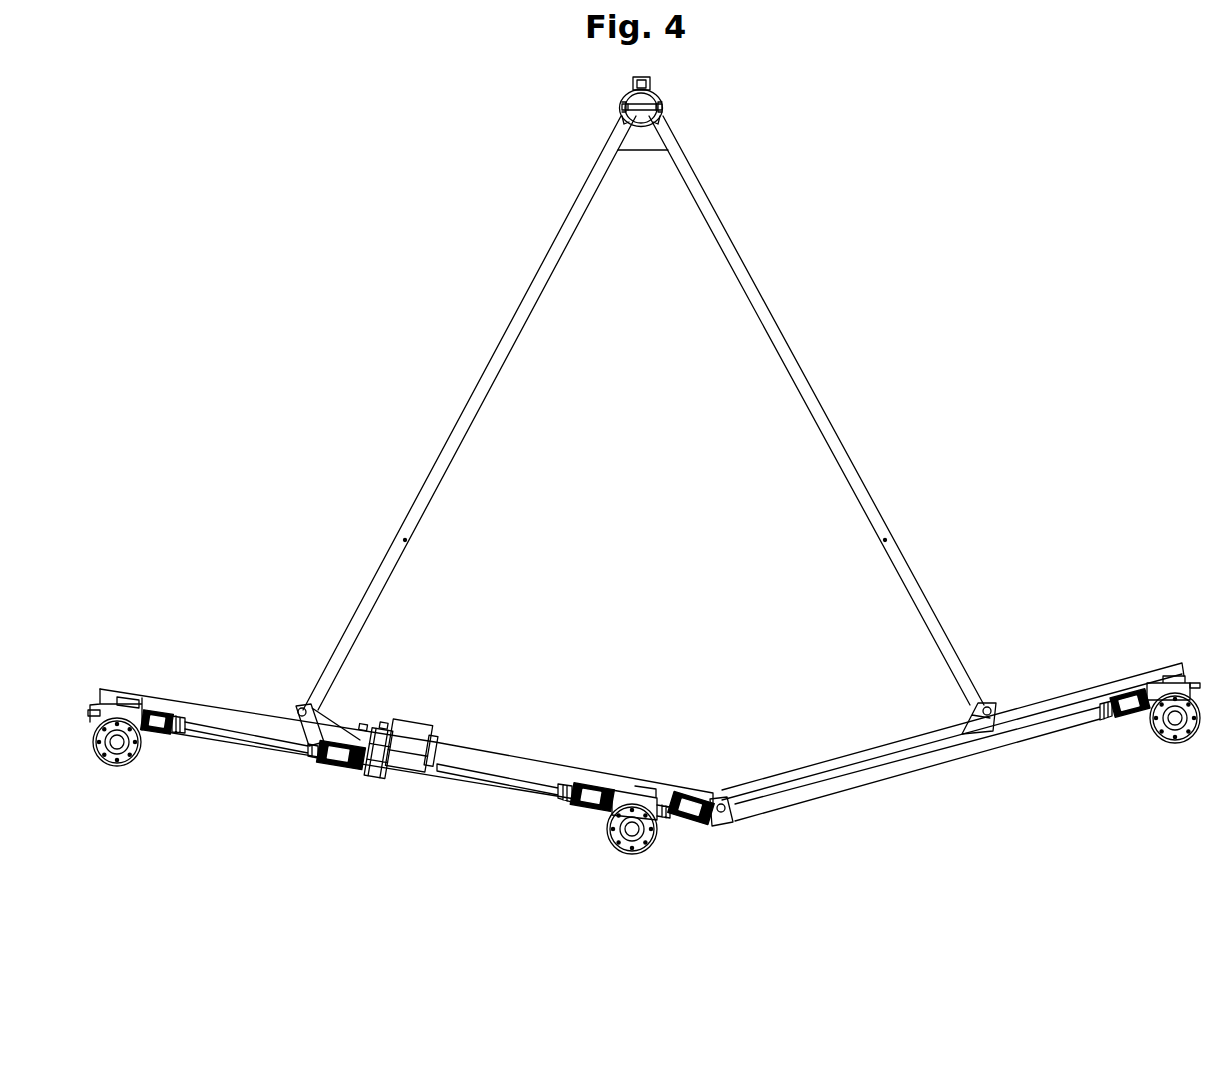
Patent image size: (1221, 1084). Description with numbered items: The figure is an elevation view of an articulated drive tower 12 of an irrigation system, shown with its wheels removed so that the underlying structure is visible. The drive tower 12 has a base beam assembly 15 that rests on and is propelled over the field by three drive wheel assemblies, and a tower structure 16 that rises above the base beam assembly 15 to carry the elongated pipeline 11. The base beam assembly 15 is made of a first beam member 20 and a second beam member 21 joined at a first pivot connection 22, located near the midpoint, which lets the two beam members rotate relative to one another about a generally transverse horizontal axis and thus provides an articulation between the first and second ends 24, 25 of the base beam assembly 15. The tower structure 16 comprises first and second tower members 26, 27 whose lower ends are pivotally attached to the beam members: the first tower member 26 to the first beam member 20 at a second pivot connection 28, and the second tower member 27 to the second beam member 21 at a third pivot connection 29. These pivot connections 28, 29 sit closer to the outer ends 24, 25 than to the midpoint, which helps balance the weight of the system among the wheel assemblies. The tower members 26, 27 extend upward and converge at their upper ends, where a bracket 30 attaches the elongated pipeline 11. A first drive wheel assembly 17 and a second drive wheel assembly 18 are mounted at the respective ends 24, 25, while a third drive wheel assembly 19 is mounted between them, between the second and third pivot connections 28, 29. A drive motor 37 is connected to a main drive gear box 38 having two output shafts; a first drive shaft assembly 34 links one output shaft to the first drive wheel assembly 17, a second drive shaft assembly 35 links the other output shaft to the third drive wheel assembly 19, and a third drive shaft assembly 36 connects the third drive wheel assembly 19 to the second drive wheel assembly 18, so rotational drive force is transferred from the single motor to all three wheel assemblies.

The elongated pipeline 11 is at (662, 107).
The drive tower 12 is at (285, 480).
The base beam assembly 15 is at (560, 762).
The tower structure 16 is at (492, 357).
The first drive wheel assembly 17 is at (120, 760).
The second drive wheel assembly 18 is at (1162, 740).
The third drive wheel assembly 19 is at (612, 838).
The first beam member 20 is at (490, 760).
The second beam member 21 is at (912, 736).
The first pivot connection 22 is at (722, 815).
The first end 24 is at (113, 690).
The second end 25 is at (1162, 667).
The first tower member 26 is at (553, 259).
The second tower member 27 is at (748, 268).
The second pivot connection 28 is at (300, 707).
The third pivot connection 29 is at (990, 706).
The bracket 30 is at (632, 138).
The first drive shaft assembly 34 is at (232, 738).
The second drive shaft assembly 35 is at (505, 778).
The third drive shaft assembly 36 is at (905, 740).
The drive motor 37 is at (410, 752).
The main drive gear box 38 is at (370, 770).